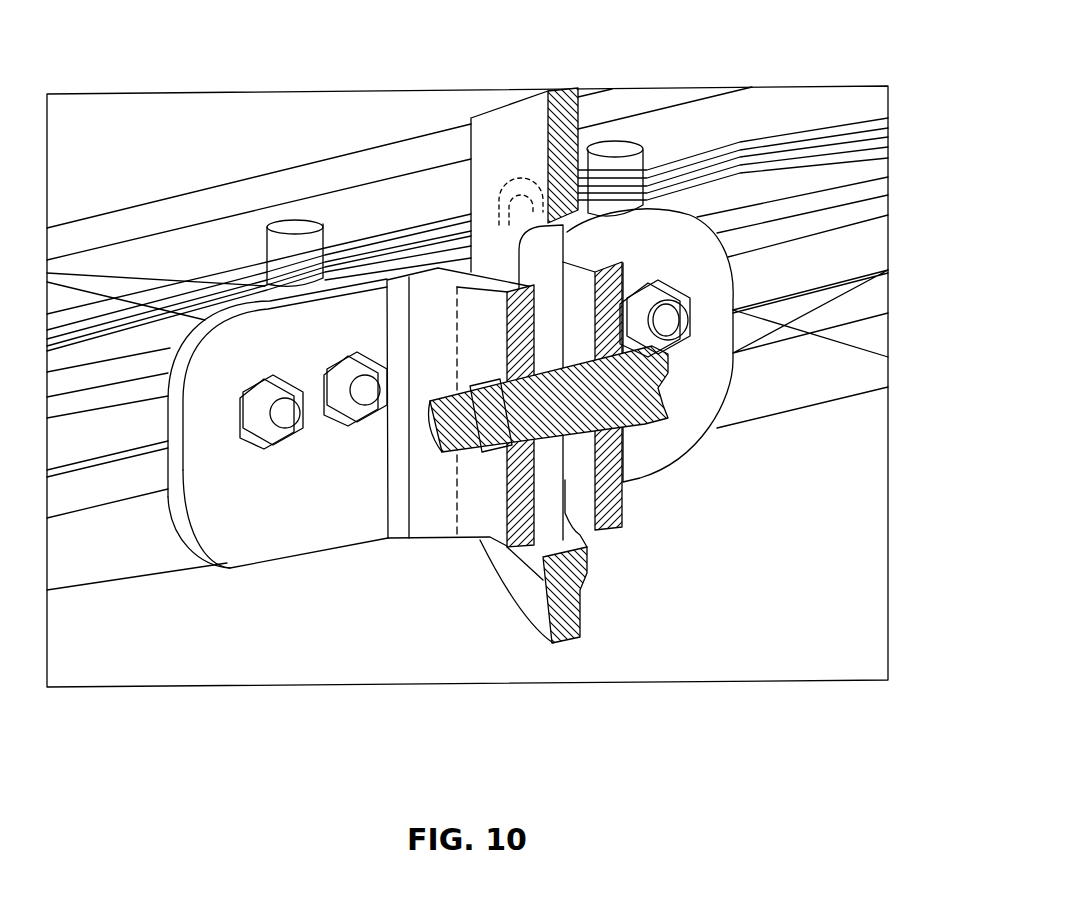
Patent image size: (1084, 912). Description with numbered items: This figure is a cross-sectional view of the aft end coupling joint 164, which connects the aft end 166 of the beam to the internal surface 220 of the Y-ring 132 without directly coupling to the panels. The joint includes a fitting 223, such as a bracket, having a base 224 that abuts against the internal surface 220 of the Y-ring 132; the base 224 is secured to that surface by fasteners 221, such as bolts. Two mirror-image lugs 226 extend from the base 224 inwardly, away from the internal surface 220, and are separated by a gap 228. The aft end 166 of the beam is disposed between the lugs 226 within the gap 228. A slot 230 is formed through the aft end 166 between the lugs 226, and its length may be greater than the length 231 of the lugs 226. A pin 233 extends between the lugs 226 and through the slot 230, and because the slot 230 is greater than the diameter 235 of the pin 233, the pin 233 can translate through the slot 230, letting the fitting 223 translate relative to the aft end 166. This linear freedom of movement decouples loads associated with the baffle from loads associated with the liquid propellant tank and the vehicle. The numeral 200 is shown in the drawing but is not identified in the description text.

The Y-ring 132 is at (878, 220).
The aft end coupling joint 164 is at (357, 563).
The aft end 166 is at (606, 133).
The mounting plate 200 is at (735, 515).
The internal surface 220 is at (845, 240).
The fasteners 221 is at (328, 388).
The fitting 223 is at (227, 567).
The base 224 is at (287, 553).
The lugs 226 is at (495, 538).
The gap 228 is at (580, 283).
The slot 230 is at (519, 248).
The length 231 is at (453, 318).
The pin 233 is at (432, 440).
The diameter 235 is at (445, 445).